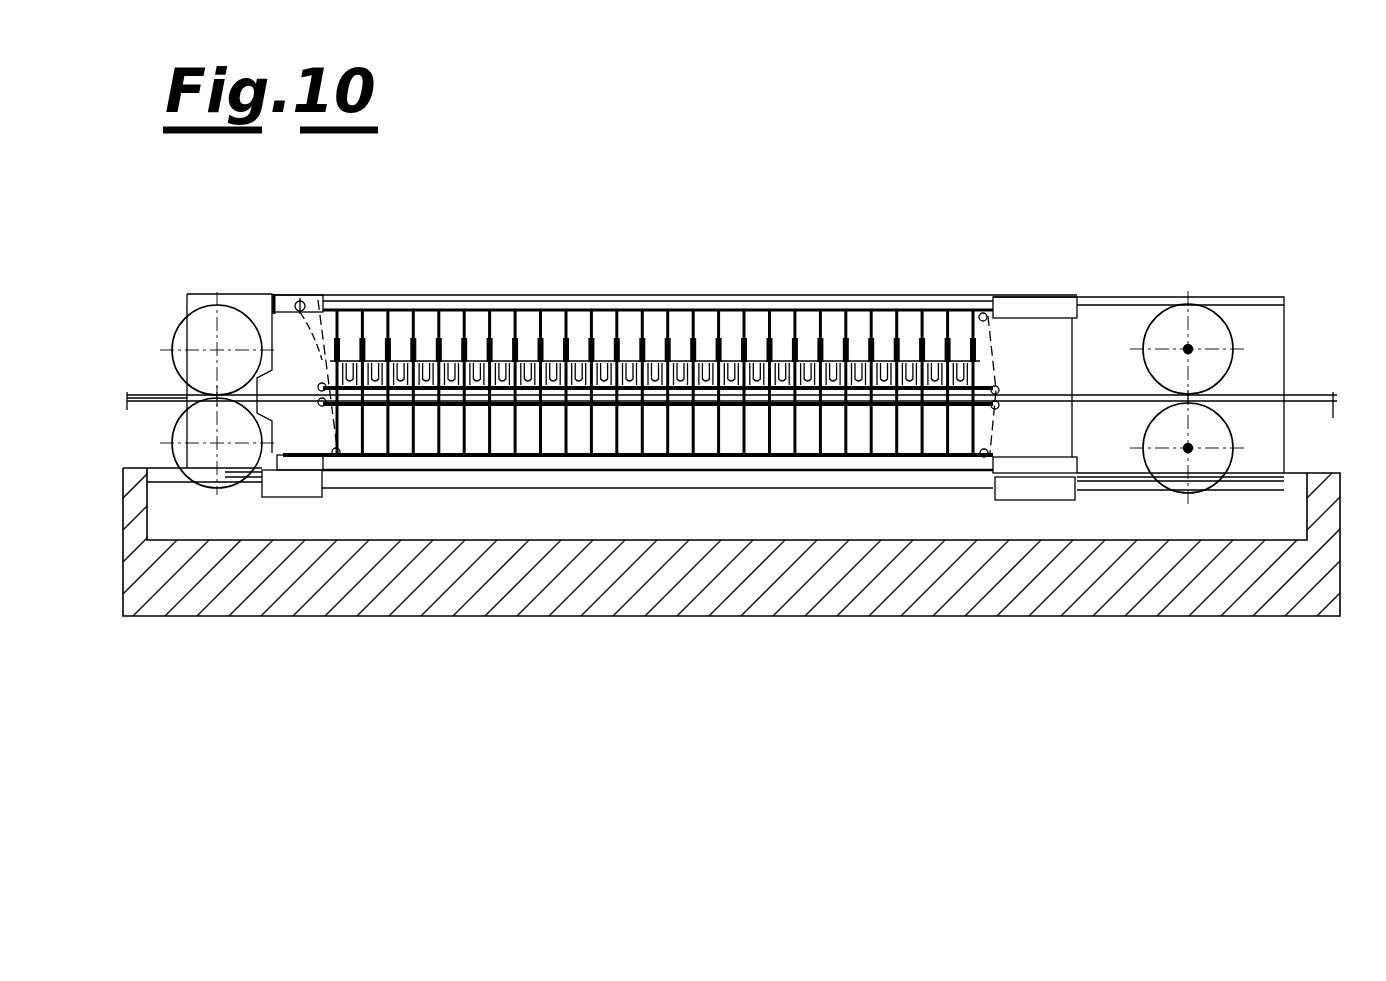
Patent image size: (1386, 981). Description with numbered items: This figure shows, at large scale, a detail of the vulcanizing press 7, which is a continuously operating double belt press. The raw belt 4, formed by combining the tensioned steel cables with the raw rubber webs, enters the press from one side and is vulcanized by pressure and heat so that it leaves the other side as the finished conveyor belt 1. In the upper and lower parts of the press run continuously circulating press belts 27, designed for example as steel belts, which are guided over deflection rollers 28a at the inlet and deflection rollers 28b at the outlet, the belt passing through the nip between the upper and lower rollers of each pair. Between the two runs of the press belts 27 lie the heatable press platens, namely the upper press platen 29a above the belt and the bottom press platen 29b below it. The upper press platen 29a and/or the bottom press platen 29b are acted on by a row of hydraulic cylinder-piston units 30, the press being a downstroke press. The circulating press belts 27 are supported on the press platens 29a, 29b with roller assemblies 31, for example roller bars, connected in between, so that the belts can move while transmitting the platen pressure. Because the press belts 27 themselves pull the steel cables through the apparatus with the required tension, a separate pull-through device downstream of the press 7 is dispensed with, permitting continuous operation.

The conveyor belt 1 is at (1308, 403).
The raw belt 4 is at (143, 397).
The vulcanizing press 7 is at (777, 238).
The press belts 27 is at (240, 312).
The deflection roller 28a is at (188, 392).
The deflection roller 28b is at (1226, 430).
The upper press platen 29a is at (545, 386).
The bottom press platen 29b is at (530, 405).
The hydraulic cylinder-piston units 30 is at (430, 360).
The roller assemblies 31 is at (322, 300).